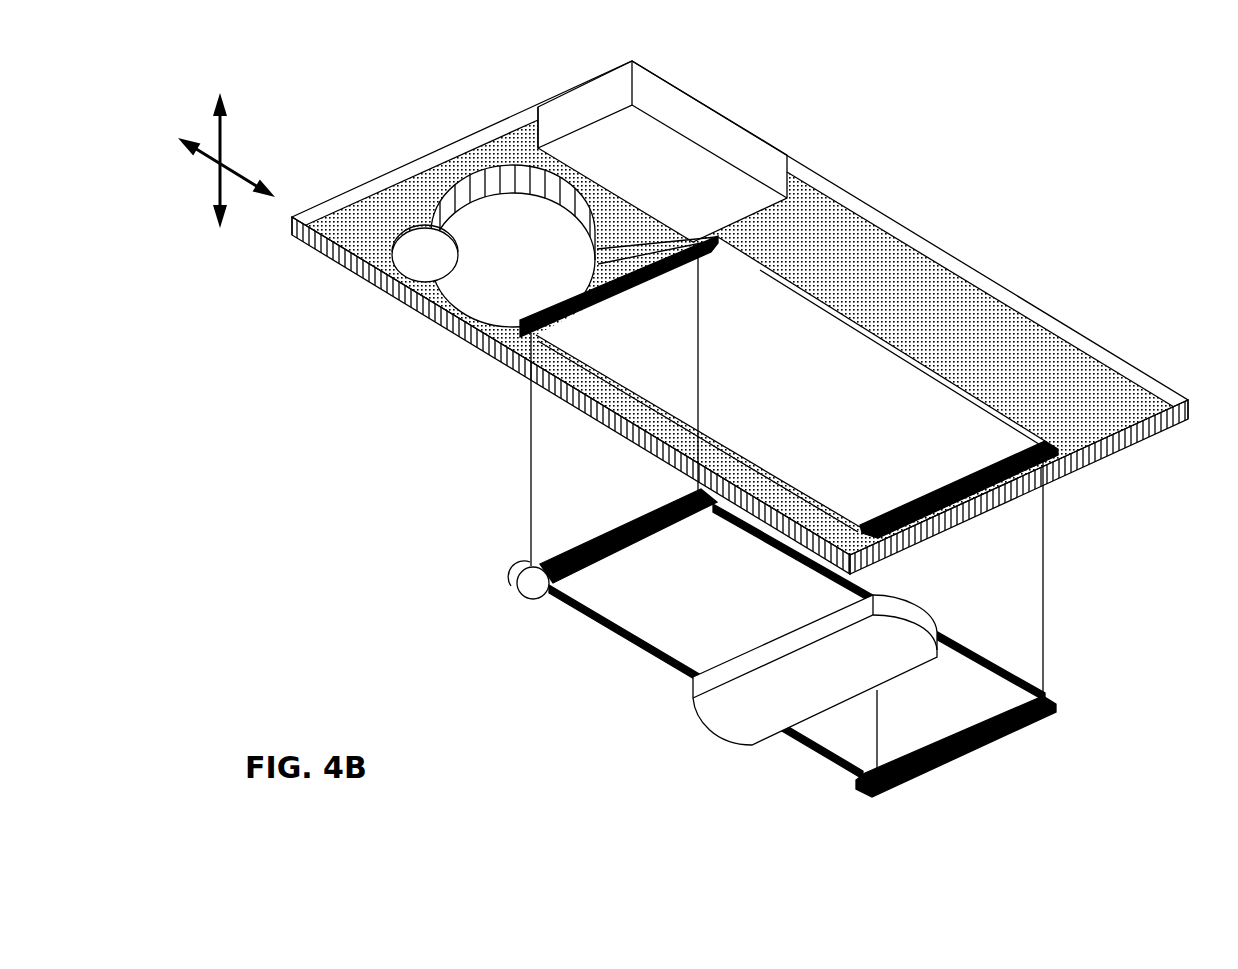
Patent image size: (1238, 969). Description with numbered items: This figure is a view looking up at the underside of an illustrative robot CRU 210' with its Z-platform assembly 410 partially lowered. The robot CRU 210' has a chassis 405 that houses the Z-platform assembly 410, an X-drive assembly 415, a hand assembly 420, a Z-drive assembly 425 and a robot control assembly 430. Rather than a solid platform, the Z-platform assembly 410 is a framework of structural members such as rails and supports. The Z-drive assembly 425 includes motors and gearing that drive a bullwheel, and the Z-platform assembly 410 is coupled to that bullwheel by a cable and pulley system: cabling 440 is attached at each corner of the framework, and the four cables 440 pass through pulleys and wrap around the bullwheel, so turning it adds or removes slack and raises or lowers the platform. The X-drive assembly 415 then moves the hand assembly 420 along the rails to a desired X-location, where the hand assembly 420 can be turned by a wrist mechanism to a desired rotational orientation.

The robot CRU 210' is at (696, 429).
The chassis 405 is at (932, 242).
The Z-platform assembly 410 is at (1010, 747).
The X-drive assembly 415 is at (528, 592).
The hand assembly 420 is at (859, 645).
The Z-drive assembly 425 is at (455, 296).
The robot control assembly 430 is at (697, 176).
The cabling 440 is at (700, 392).